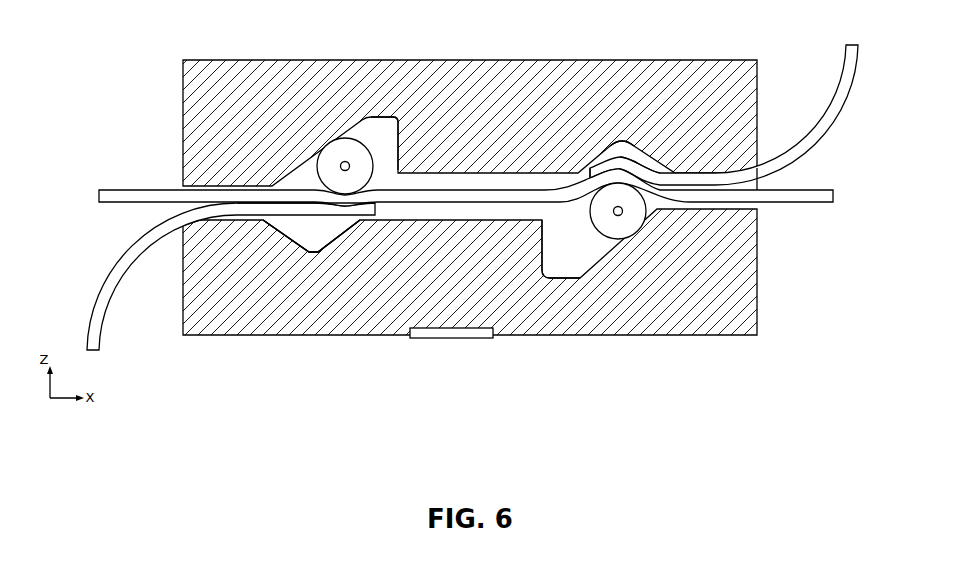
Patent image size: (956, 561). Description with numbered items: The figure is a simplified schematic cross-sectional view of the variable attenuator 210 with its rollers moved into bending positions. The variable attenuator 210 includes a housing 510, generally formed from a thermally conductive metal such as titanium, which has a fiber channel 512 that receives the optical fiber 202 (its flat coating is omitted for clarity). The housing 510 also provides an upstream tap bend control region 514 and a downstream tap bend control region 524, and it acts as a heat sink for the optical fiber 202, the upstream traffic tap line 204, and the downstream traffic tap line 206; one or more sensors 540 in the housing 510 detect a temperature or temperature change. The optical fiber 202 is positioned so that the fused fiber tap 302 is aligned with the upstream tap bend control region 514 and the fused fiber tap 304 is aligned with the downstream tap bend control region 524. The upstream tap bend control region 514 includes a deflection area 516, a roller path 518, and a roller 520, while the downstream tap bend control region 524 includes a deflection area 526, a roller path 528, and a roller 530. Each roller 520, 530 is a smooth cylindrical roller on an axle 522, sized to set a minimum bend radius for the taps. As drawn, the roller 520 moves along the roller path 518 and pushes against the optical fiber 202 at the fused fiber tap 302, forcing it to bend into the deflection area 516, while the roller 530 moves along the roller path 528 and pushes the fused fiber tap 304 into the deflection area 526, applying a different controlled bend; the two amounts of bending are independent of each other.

The optical fiber 202 is at (132, 189).
The upstream traffic tap line 204 is at (147, 244).
The downstream traffic tap line 206 is at (790, 148).
The variable attenuator 210 is at (500, 178).
The fused fiber tap 302 is at (288, 225).
The fused fiber tap 304 is at (603, 152).
The housing 510 is at (758, 82).
The fiber channel 512 is at (765, 211).
The upstream tap bend control region 514 is at (356, 244).
The deflection area 516 is at (302, 238).
The roller path 518 is at (369, 145).
The roller 520 is at (367, 117).
The axle 522 is at (344, 163).
The downstream tap bend control region 524 is at (656, 148).
The deflection area 526 is at (630, 141).
The roller path 528 is at (552, 258).
The roller 530 is at (597, 233).
The sensor 540 is at (457, 339).